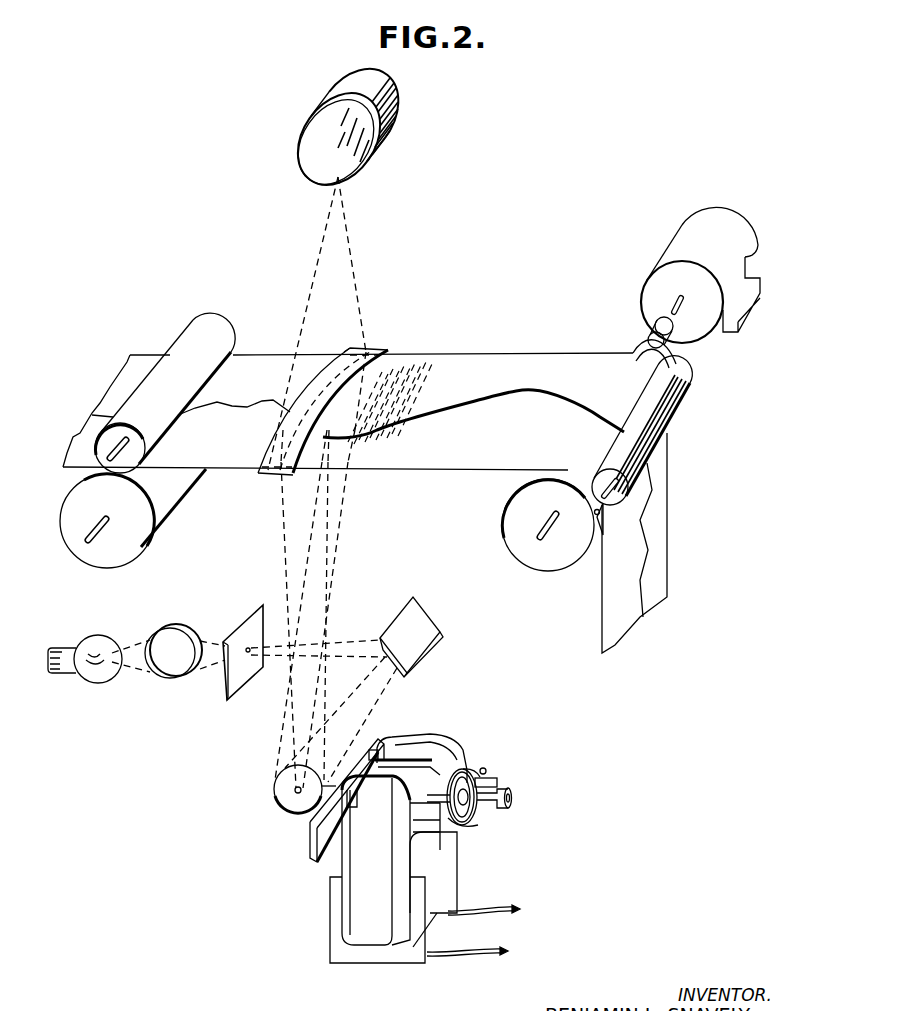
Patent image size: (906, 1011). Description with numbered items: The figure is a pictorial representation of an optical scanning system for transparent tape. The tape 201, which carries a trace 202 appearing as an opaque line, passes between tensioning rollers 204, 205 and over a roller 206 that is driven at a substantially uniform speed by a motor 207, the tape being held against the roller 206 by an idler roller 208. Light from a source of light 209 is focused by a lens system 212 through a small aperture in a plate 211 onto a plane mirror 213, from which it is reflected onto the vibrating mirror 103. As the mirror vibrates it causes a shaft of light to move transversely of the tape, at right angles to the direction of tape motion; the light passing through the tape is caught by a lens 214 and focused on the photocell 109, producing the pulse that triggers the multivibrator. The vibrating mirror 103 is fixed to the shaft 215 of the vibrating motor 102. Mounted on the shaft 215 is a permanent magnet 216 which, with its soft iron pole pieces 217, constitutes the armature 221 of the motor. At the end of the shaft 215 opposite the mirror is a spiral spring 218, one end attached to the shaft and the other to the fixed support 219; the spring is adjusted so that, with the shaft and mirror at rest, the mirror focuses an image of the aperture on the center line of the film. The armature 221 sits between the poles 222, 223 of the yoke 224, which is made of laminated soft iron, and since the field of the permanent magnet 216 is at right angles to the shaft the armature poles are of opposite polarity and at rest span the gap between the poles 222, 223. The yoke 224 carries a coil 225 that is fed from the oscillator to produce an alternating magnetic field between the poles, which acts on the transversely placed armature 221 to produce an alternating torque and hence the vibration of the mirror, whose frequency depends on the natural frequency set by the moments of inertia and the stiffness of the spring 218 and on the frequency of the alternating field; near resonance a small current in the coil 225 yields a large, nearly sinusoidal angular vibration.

The vibrating motor 102 is at (477, 818).
The vibrating mirror 103 is at (280, 787).
The photocell 109 is at (347, 167).
The tape 201 is at (514, 353).
The trace 202 is at (475, 402).
The tensioning roller 204 is at (183, 350).
The tensioning roller 205 is at (140, 545).
The roller 206 is at (505, 530).
The motor 207 is at (678, 244).
The idler roller 208 is at (682, 406).
The source of light 209 is at (98, 682).
The plate 211 is at (240, 680).
The lens system 212 is at (176, 677).
The mirror 213 is at (437, 628).
The lens 214 is at (372, 350).
The shaft 215 is at (312, 826).
The permanent magnet 216 is at (458, 770).
The soft iron pole pieces 217 is at (397, 773).
The spiral spring 218 is at (473, 767).
The fixed support 219 is at (495, 780).
The armature 221 is at (463, 820).
The pole 222 is at (413, 755).
The pole 223 is at (383, 787).
The yoke 224 is at (400, 923).
The coil 225 is at (442, 893).